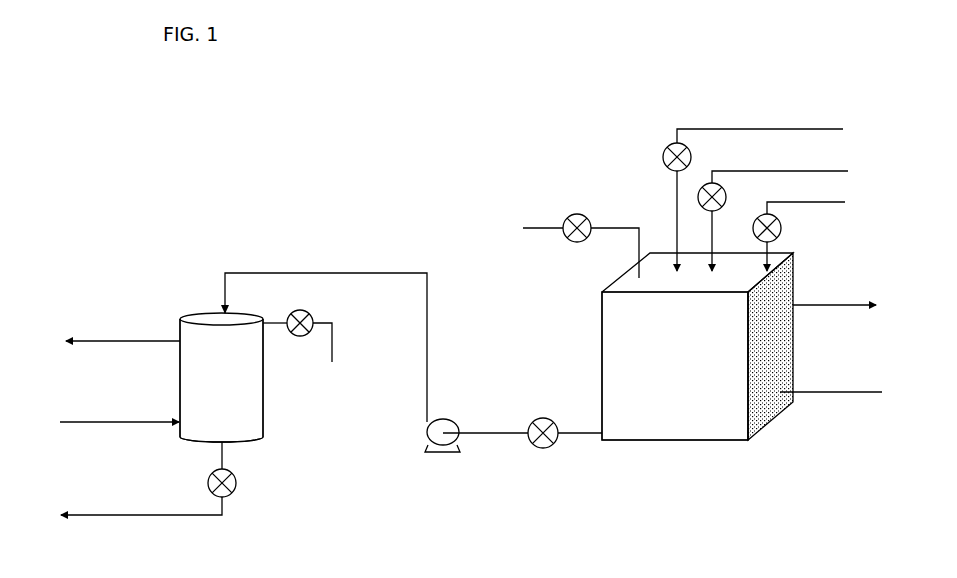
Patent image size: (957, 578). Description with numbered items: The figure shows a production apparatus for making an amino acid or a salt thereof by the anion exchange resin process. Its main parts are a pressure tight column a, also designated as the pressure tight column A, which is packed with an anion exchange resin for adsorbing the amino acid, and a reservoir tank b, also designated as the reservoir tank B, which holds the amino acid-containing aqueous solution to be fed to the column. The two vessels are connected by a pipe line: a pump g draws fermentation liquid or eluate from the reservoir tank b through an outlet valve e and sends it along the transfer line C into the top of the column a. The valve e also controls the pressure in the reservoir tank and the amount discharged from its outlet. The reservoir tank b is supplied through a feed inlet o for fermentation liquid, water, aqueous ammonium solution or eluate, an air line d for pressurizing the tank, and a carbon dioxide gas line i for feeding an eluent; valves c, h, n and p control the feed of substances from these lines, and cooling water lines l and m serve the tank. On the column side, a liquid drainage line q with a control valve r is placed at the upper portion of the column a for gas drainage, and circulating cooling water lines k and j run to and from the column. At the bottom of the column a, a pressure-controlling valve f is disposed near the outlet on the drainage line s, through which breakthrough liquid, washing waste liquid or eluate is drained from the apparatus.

The pressure tight column a is at (221, 377).
The pressure tight column A is at (245, 380).
The reservoir tank b is at (697, 346).
The reservoir tank B is at (675, 384).
The transfer line C is at (351, 347).
The valve c is at (663, 207).
The air line d is at (760, 123).
The valve e is at (565, 450).
The pressure-controlling valve f is at (234, 470).
The pump g is at (476, 448).
The valve h is at (722, 227).
The carbon dioxide gas line i is at (780, 163).
The cooling water line j is at (107, 421).
The cooling water line k is at (100, 341).
The cooling water line l is at (843, 387).
The cooling water line m is at (854, 304).
The valve n is at (581, 246).
The feed inlet o is at (806, 194).
The valve p is at (776, 242).
The liquid drainage line q is at (339, 347).
The valve r is at (298, 315).
The drainage line s is at (141, 523).